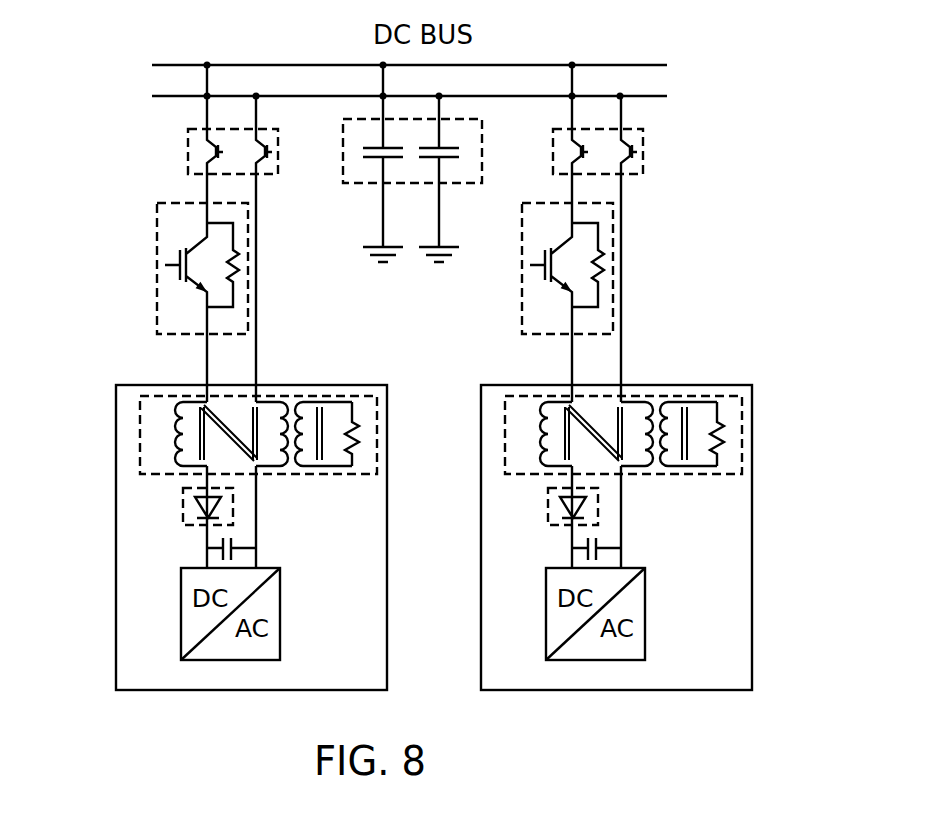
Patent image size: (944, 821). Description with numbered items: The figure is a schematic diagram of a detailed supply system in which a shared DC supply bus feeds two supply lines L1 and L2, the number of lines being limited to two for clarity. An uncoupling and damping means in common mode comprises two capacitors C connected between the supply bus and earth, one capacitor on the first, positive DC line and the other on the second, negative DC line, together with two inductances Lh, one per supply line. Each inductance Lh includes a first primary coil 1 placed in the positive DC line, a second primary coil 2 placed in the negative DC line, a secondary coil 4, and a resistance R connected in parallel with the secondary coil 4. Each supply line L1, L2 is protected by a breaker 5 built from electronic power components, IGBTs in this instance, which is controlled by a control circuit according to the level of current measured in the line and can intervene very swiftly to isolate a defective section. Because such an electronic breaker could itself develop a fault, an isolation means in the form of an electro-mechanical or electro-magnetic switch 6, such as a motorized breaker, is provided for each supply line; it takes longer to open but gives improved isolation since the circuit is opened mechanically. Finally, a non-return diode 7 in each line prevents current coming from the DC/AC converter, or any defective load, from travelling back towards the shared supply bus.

The first primary coil 1 is at (178, 462).
The second primary coil 2 is at (288, 463).
The secondary coil 4 is at (304, 410).
The breaker 5 is at (157, 245).
The electro-mechanical or electro-magnetic switch 6 is at (188, 152).
The non-return diode 7 is at (183, 510).
The resistance R is at (354, 420).
The capacitor C is at (459, 207).
The supply line L1 is at (157, 365).
The supply line L2 is at (655, 240).
The inductance Lh is at (812, 392).